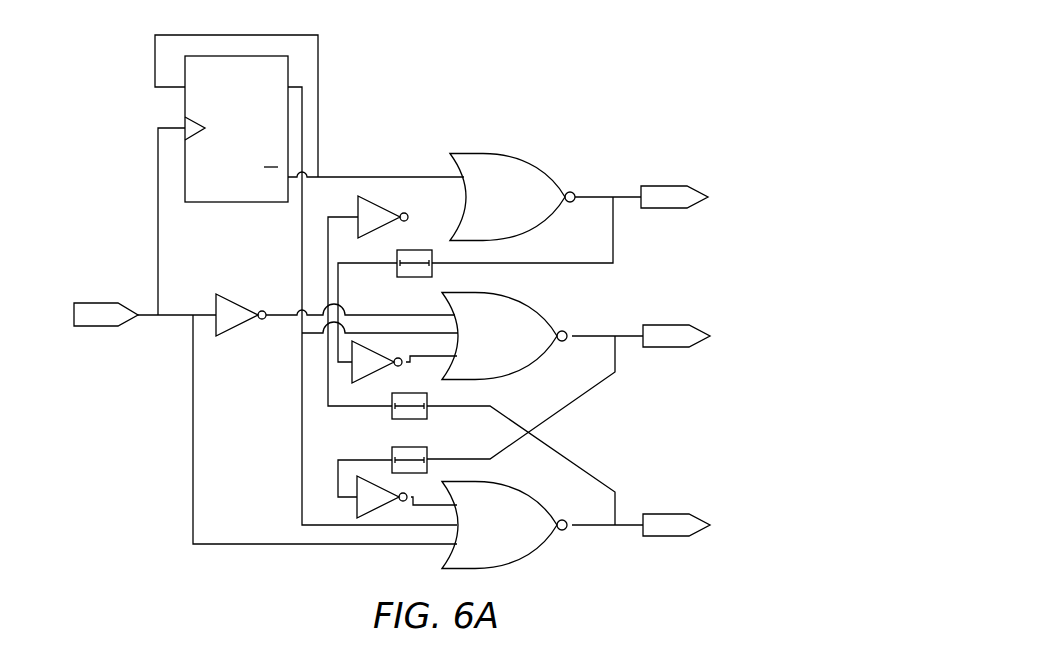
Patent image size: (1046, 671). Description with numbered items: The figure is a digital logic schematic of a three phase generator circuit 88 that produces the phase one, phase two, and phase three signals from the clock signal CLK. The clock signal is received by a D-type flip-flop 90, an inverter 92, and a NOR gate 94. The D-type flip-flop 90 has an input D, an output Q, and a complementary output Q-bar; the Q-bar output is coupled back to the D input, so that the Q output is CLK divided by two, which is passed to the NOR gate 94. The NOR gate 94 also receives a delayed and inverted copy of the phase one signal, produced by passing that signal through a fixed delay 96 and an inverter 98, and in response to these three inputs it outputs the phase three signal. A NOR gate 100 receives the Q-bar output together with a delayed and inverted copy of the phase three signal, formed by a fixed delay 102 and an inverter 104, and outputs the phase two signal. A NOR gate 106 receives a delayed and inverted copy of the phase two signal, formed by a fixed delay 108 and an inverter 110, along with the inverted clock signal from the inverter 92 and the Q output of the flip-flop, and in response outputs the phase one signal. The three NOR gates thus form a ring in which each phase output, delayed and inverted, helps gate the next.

The three phase generator circuit 88 is at (484, 50).
The D-type flip-flop 90 is at (248, 138).
The inverter 92 is at (233, 294).
The NOR gate 94 is at (506, 535).
The fixed delay 96 is at (418, 447).
The inverter 98 is at (346, 508).
The NOR gate 100 is at (518, 208).
The fixed delay 102 is at (392, 420).
The inverter 104 is at (373, 205).
The NOR gate 106 is at (513, 346).
The fixed delay 108 is at (415, 278).
The inverter 110 is at (378, 370).